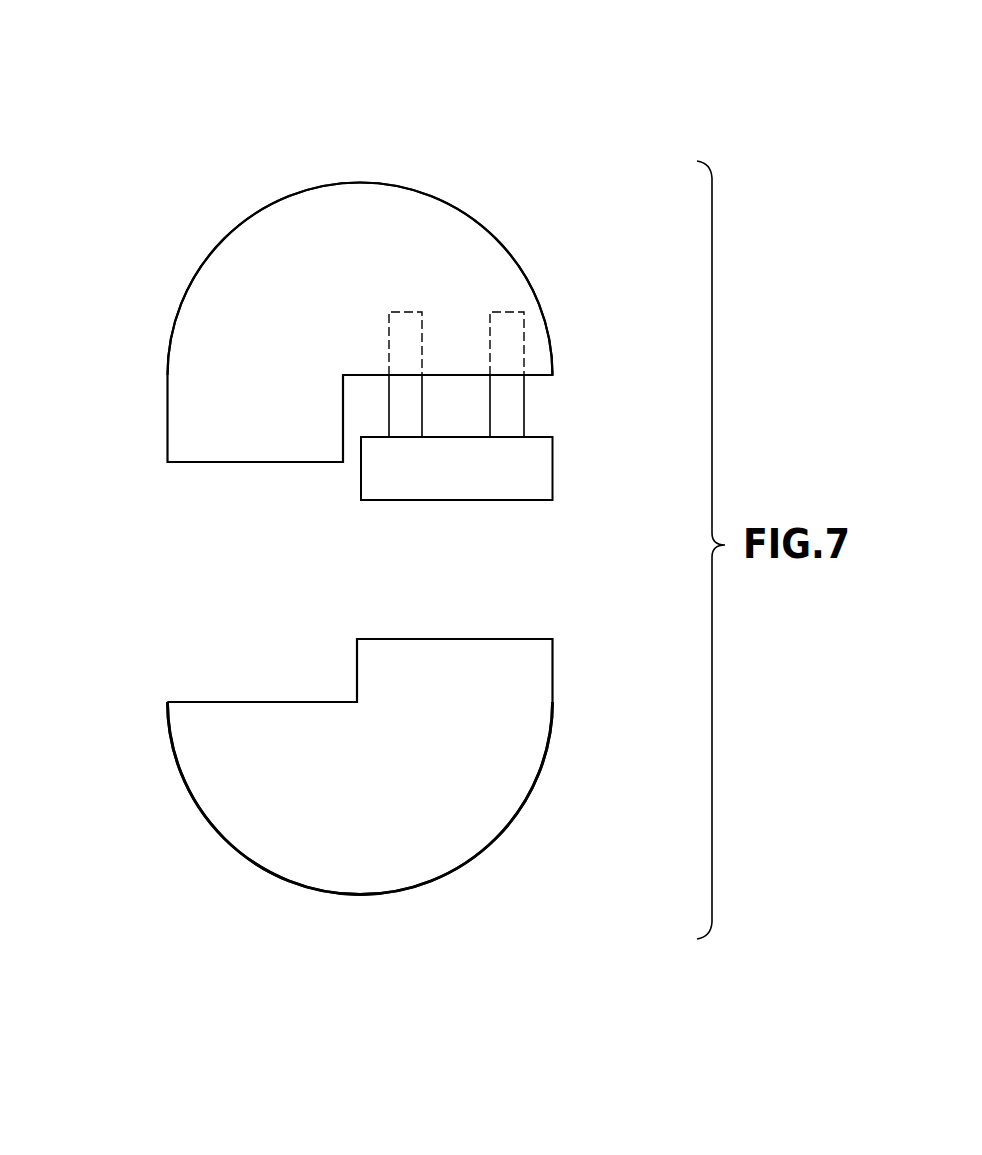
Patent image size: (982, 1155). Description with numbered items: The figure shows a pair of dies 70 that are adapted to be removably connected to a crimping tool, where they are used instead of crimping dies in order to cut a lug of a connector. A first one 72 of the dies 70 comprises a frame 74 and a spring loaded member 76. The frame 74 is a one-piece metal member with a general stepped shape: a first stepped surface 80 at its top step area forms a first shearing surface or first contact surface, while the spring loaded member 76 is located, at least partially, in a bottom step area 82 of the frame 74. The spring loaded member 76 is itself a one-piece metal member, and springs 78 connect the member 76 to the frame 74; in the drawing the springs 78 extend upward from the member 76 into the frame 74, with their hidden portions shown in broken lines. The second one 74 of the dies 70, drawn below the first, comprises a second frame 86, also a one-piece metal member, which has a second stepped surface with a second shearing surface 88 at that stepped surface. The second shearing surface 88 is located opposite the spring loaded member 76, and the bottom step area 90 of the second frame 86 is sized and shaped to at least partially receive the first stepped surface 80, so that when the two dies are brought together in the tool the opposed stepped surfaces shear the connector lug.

The pair of dies 70 is at (178, 131).
The first die 72 is at (188, 288).
The frame 74 is at (420, 188).
The spring loaded member 76 is at (553, 477).
The springs 78 is at (407, 397).
The first stepped surface 80 is at (193, 465).
The bottom step area 82 is at (455, 407).
The second frame 86 is at (427, 885).
The second shearing surface 88 is at (515, 638).
The bottom step area of the second frame 90 is at (203, 700).